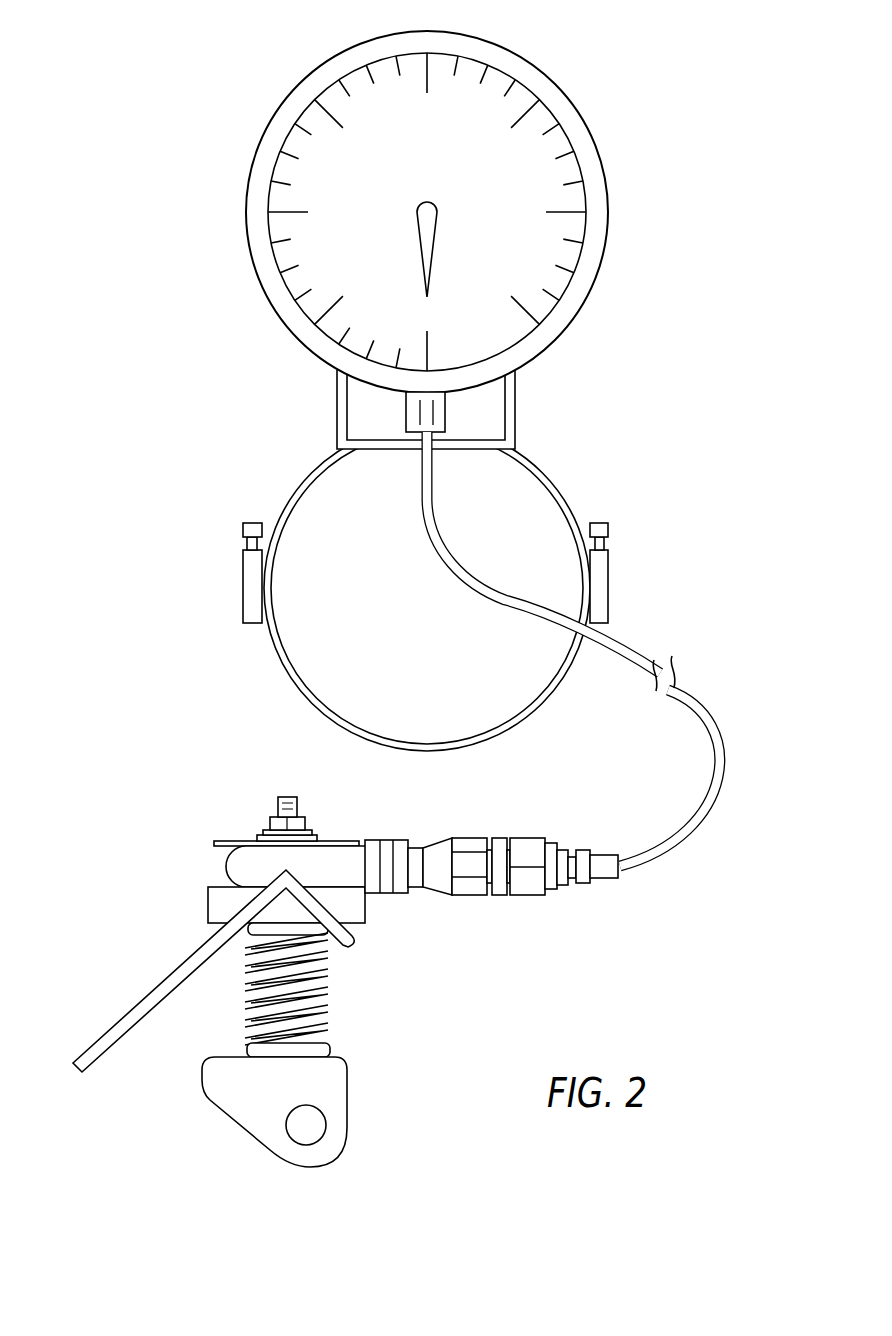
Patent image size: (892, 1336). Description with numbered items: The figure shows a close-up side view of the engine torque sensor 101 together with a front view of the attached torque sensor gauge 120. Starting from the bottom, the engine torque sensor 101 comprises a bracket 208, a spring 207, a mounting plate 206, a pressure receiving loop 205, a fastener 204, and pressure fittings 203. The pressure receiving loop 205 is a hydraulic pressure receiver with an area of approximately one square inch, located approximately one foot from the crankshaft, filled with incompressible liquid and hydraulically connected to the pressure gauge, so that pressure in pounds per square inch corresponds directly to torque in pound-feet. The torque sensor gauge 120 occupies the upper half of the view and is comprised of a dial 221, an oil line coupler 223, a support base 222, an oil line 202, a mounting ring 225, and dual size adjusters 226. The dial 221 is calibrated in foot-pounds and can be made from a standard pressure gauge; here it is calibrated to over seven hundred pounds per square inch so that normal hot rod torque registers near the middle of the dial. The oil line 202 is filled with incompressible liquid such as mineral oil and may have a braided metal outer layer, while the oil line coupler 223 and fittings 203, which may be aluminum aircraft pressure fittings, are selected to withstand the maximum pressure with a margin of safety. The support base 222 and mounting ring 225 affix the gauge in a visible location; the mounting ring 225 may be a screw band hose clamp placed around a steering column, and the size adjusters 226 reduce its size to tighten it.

The engine torque sensor 101 is at (538, 956).
The torque sensor gauge 120 is at (165, 161).
The dial 221 is at (555, 83).
The support base 222 is at (518, 420).
The oil line coupler 223 is at (406, 412).
The mounting ring 225 is at (560, 490).
The dual size adjusters 226 is at (242, 586).
The oil line 202 is at (648, 868).
The pressure fittings 203 is at (468, 840).
The fastener 204 is at (270, 822).
The pressure receiving loop 205 is at (226, 867).
The mounting plate 206 is at (141, 1000).
The spring 207 is at (328, 983).
The bracket 208 is at (347, 1085).